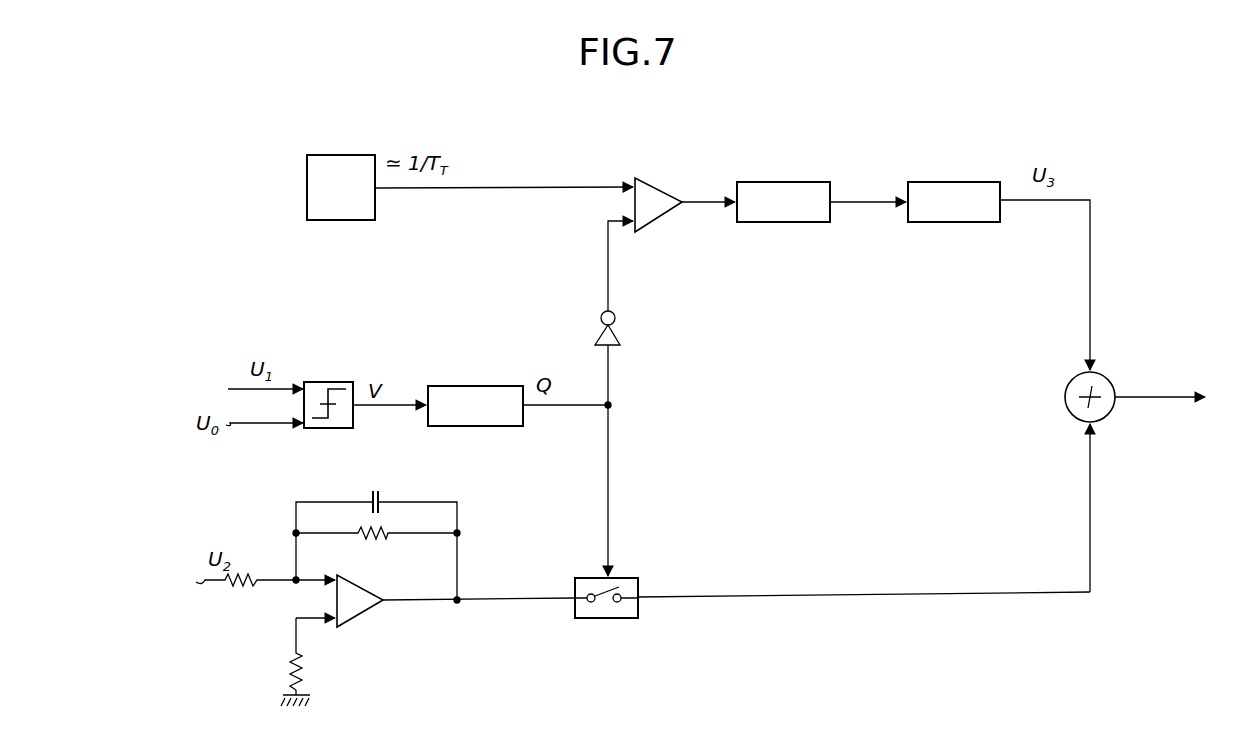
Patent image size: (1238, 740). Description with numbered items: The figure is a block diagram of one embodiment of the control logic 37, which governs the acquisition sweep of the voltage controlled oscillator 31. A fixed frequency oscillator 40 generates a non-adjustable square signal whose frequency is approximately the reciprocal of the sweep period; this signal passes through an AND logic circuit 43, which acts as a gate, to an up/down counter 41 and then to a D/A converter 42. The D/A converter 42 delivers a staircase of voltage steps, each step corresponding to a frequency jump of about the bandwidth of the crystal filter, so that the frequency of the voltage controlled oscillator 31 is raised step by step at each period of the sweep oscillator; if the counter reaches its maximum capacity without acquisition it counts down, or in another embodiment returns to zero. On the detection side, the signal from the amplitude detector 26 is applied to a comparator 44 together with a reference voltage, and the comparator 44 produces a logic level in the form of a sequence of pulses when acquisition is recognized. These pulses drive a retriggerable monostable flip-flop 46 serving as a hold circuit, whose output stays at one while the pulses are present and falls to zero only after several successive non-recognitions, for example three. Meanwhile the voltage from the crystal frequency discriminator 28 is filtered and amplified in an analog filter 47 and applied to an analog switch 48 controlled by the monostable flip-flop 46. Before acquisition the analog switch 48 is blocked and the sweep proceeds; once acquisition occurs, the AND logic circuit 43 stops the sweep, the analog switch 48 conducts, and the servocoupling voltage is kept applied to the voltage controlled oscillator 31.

The fixed frequency oscillator 40 is at (341, 156).
The AND logic circuit 43 is at (652, 190).
The up/down counter 41 is at (778, 182).
The control logic 37 is at (872, 186).
The D/A converter 42 is at (955, 182).
The voltage controlled oscillator 31 is at (1184, 395).
The amplitude detector 26 is at (228, 389).
The comparator 44 is at (329, 382).
The retriggerable monostable flip-flop 46 is at (474, 386).
The analog switch 48 is at (632, 580).
The analog filter 47 is at (364, 612).
The crystal frequency discriminator 28 is at (246, 581).